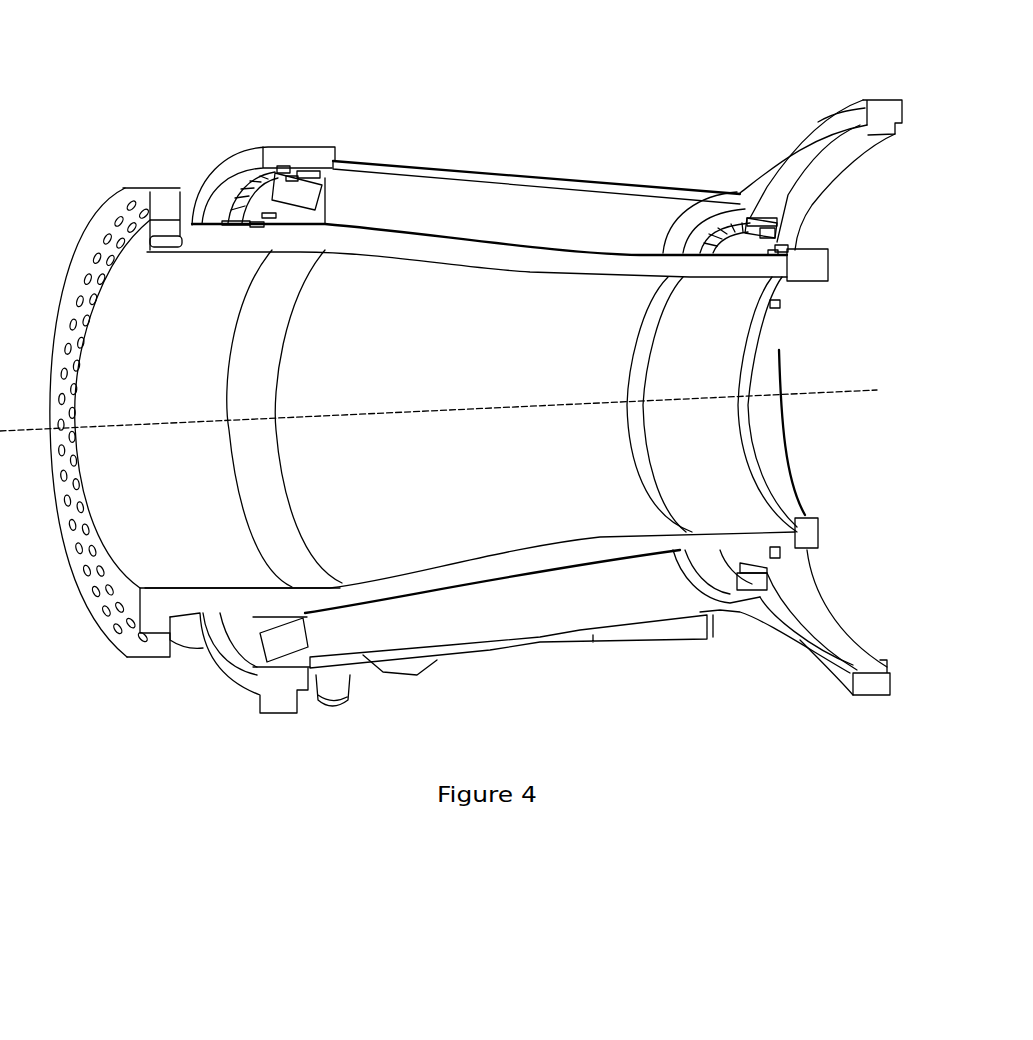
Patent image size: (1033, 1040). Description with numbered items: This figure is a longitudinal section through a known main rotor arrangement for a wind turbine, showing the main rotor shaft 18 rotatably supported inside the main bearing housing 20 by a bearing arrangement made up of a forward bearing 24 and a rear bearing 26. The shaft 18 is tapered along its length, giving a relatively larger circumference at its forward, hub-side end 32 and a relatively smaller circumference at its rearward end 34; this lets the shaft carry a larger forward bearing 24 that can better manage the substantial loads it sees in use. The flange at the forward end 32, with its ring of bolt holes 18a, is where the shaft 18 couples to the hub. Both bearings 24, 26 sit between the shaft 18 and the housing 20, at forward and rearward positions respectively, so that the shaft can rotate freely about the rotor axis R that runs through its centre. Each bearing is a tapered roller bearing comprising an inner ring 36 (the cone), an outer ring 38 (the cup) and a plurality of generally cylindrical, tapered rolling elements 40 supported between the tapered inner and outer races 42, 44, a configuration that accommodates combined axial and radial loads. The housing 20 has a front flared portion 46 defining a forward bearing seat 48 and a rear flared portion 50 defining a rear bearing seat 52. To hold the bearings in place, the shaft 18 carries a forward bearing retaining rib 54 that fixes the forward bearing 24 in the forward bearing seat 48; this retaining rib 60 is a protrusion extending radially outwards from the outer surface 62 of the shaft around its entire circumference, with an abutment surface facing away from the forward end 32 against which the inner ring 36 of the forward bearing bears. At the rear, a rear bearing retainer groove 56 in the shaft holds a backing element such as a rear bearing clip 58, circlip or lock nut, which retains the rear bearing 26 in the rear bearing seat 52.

The main rotor shaft 18 is at (143, 557).
The flange boss / bolt hole 18a is at (138, 208).
The main bearing housing 20 is at (527, 172).
The forward bearing 24 is at (336, 186).
The rear bearing 26 is at (788, 223).
The forward end 32 is at (282, 755).
The rearward end 34 is at (769, 690).
The inner ring 36 is at (258, 207).
The outer ring 38 is at (303, 173).
The rolling elements 40 is at (283, 193).
The inner bearing race 42 is at (278, 200).
The outer bearing race 44 is at (290, 177).
The front flared portion 46 is at (280, 138).
The forward bearing seat 48 is at (293, 172).
The rear flared portion 50 is at (863, 100).
The rear bearing seat 52 is at (763, 217).
The forward bearing retaining rib 54 is at (235, 225).
The rear bearing retainer groove 56 is at (777, 253).
The rear bearing clip 58 is at (780, 248).
The retaining rib 60 is at (253, 227).
The outer surface 62 is at (427, 227).
The rotor axis R is at (827, 393).